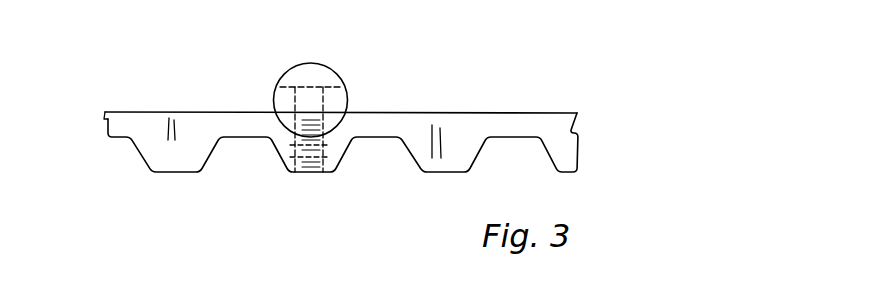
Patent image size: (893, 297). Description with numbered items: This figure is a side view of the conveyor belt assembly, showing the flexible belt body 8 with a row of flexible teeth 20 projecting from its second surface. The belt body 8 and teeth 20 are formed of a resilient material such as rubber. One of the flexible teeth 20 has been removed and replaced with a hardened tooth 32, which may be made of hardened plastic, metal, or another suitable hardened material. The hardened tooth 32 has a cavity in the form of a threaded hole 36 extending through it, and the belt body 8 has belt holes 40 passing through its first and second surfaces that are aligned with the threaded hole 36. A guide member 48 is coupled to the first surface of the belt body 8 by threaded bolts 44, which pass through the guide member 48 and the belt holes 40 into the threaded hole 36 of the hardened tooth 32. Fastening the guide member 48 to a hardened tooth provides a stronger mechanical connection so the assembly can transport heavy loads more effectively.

The belt body 8 is at (491, 112).
The flexible teeth 20 is at (168, 172).
The hardened tooth 32 is at (288, 172).
The threaded hole 36 is at (322, 168).
The belt holes 40 is at (298, 121).
The threaded bolts 44 is at (331, 70).
The guide member 48 is at (347, 92).